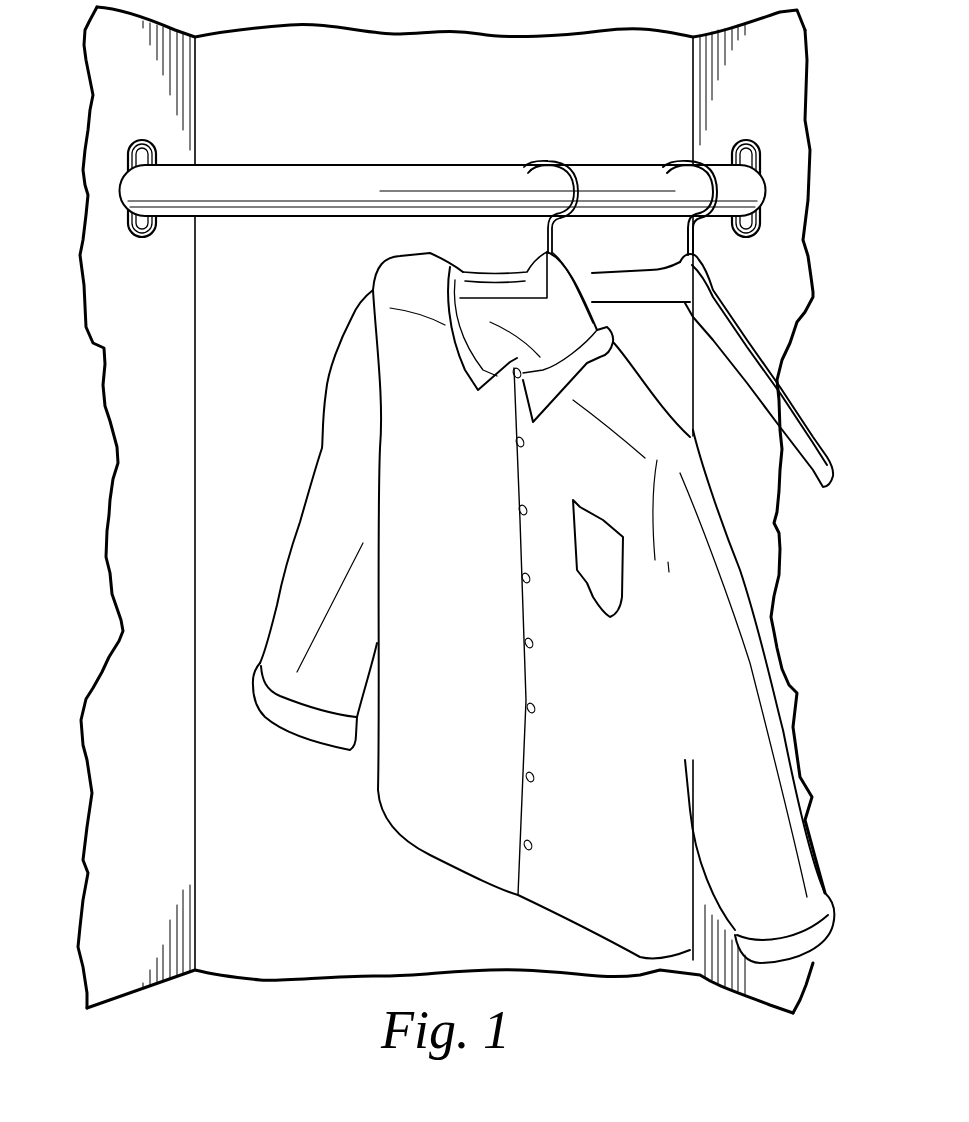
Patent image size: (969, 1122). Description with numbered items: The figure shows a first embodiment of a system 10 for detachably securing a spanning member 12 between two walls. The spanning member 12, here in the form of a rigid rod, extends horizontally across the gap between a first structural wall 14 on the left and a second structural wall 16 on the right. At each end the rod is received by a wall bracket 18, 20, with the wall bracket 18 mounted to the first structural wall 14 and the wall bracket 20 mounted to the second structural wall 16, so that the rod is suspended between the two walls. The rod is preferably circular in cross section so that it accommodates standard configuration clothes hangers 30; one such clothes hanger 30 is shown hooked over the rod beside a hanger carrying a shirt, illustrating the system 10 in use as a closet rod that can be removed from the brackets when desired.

The system 10 is at (442, 90).
The spanning member 12 is at (345, 178).
The first structural wall 14 is at (105, 78).
The second structural wall 16 is at (780, 88).
The wall bracket 18 is at (137, 238).
The wall bracket 20 is at (757, 230).
The clothes hanger 30 is at (812, 430).